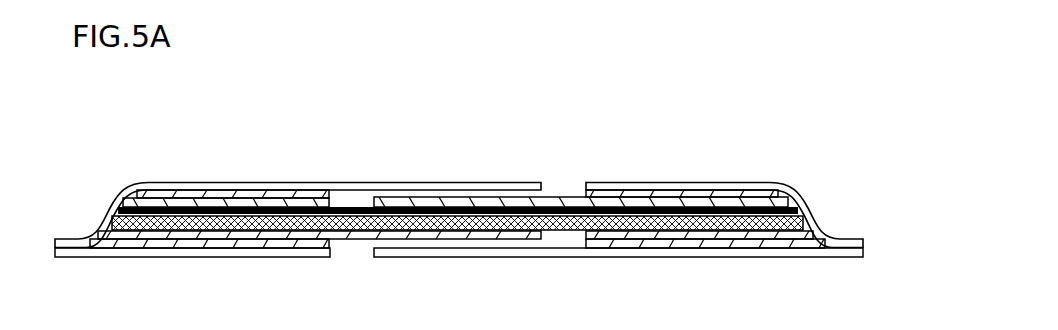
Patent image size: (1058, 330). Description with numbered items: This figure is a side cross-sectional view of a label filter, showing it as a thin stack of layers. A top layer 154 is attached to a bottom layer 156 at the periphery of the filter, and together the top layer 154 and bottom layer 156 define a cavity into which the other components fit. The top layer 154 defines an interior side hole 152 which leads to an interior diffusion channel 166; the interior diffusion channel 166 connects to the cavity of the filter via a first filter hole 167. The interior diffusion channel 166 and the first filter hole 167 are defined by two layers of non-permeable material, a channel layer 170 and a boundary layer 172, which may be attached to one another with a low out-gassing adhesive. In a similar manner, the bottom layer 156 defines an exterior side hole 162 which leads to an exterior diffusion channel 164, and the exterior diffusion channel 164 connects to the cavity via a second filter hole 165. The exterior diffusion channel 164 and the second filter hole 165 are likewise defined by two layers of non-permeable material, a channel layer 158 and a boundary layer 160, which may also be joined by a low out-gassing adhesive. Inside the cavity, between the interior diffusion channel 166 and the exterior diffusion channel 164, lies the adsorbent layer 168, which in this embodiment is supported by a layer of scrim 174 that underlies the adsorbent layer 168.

The interior side hole 152 is at (561, 190).
The top layer 154 is at (160, 187).
The bottom layer 156 is at (122, 253).
The channel layer 158 is at (197, 247).
The boundary layer 160 is at (256, 237).
The exterior side hole 162 is at (353, 252).
The exterior diffusion channel 164 is at (458, 243).
The second filter hole 165 is at (564, 240).
The interior diffusion channel 166 is at (450, 196).
The first filter hole 167 is at (349, 198).
The adsorbent layer 168 is at (800, 218).
The channel layer 170 is at (636, 195).
The boundary layer 172 is at (702, 203).
The scrim 174 is at (117, 208).